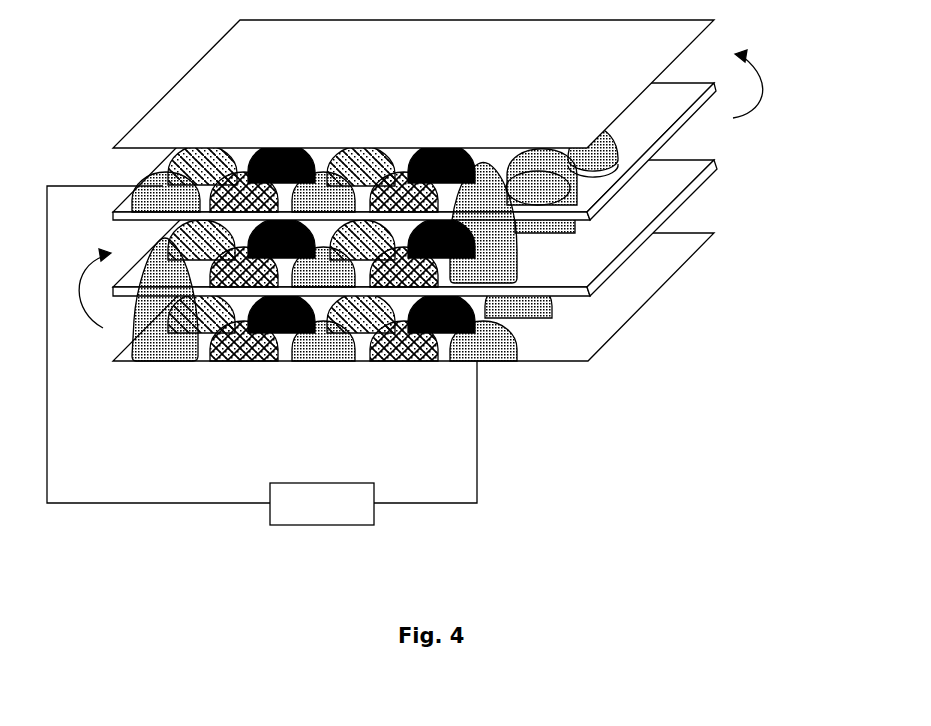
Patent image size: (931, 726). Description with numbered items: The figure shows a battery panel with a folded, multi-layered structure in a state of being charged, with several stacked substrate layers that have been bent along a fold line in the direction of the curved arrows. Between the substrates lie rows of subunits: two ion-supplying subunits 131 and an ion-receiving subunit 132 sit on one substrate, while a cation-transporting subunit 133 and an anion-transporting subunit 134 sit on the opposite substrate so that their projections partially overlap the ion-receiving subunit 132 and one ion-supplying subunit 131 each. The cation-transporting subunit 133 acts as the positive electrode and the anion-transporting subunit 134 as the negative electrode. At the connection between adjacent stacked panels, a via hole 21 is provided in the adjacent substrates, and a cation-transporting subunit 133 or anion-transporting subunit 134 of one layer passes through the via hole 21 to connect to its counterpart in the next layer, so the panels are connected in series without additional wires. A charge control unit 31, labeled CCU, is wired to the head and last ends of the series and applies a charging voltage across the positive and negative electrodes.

The via hole 21 is at (587, 148).
The ion-supplying subunit 131 is at (162, 338).
The ion-receiving subunit 132 is at (240, 348).
The cation-transporting subunit 133 is at (367, 335).
The anion-transporting subunit 134 is at (442, 340).
The charge control unit 31 is at (357, 512).